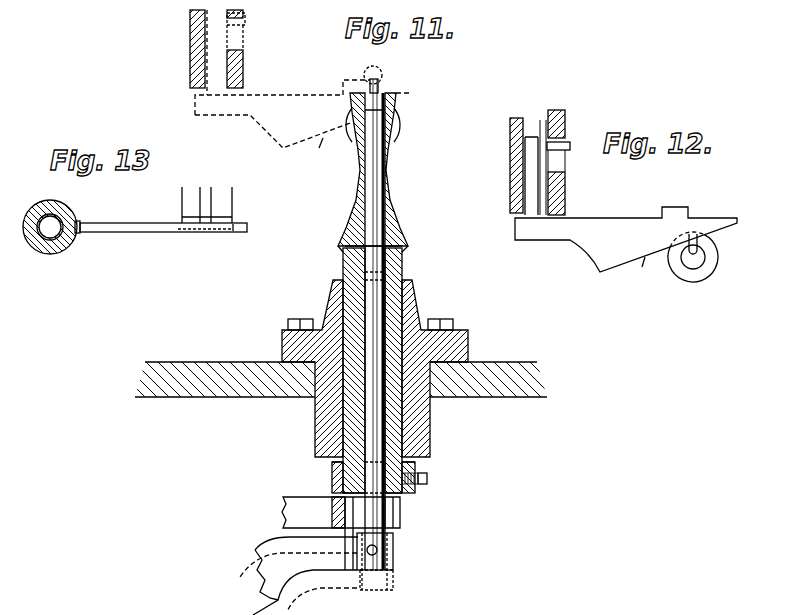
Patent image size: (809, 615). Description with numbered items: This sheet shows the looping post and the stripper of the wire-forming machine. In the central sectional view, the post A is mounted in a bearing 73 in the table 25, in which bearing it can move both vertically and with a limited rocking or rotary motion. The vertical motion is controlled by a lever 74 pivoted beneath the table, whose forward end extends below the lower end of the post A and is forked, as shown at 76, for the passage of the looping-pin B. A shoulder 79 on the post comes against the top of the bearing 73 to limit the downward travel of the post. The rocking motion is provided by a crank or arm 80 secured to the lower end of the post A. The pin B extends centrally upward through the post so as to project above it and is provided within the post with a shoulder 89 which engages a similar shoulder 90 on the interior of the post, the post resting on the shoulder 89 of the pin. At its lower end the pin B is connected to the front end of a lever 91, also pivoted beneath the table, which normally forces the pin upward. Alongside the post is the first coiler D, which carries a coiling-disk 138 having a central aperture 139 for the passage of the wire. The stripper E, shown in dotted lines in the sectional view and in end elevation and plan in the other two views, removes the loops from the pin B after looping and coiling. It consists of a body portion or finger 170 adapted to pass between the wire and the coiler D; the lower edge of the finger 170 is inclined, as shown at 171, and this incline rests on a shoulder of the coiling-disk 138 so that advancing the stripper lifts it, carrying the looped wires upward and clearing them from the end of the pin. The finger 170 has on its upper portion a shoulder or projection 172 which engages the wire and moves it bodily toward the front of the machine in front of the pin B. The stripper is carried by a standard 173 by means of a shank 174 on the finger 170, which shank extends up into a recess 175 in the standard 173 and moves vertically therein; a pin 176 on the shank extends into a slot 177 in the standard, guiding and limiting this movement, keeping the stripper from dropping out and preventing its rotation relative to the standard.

In FIG. 11, the table 25 is at (522, 388).
In FIG. 11, the bearing 73 is at (415, 307).
In FIG. 11, the lever 74 is at (290, 508).
In FIG. 11, the forked end 76 is at (400, 517).
In FIG. 11, the shoulder 79 is at (410, 248).
In FIG. 11, the crank or arm 80 is at (332, 475).
In FIG. 11, the shoulder 89 is at (397, 237).
In FIG. 11, the shoulder 90 is at (340, 245).
In FIG. 11, the lever 91 is at (270, 550).
In FIG. 11, the coiling-disk 138 is at (375, 561).
In FIG. 12, the coiling-disk 138 is at (708, 270).
In FIG. 13, the coiling-disk 138 is at (220, 233).
In FIG. 12, the central aperture 139 is at (693, 262).
In FIG. 11, the finger 170 is at (311, 103).
In FIG. 12, the finger 170 is at (625, 226).
In FIG. 13, the finger 170 is at (138, 233).
In FIG. 11, the incline 171 is at (326, 151).
In FIG. 12, the incline 171 is at (649, 270).
In FIG. 11, the shoulder or projection 172 is at (367, 70).
In FIG. 12, the shoulder or projection 172 is at (659, 194).
In FIG. 13, the shoulder or projection 172 is at (182, 232).
In FIG. 11, the standard 173 is at (245, 70).
In FIG. 12, the standard 173 is at (565, 197).
In FIG. 13, the standard 173 is at (72, 207).
In FIG. 11, the shank 174 is at (207, 32).
In FIG. 12, the shank 174 is at (528, 148).
In FIG. 11, the recess 175 is at (207, 62).
In FIG. 12, the recess 175 is at (517, 168).
In FIG. 11, the pin 176 is at (243, 22).
In FIG. 12, the pin 176 is at (567, 145).
In FIG. 13, the pin 176 is at (80, 234).
In FIG. 11, the slot 177 is at (240, 42).
In FIG. 12, the slot 177 is at (563, 168).
In FIG. 11, the post A is at (392, 215).
In FIG. 11, the looping-pin B is at (372, 175).
In FIG. 11, the coiler D is at (400, 125).
In FIG. 12, the coiler D is at (704, 257).
In FIG. 13, the coiler D is at (227, 208).
In FIG. 11, the stripper E is at (168, 106).
In FIG. 12, the stripper E is at (708, 196).
In FIG. 13, the stripper E is at (149, 206).